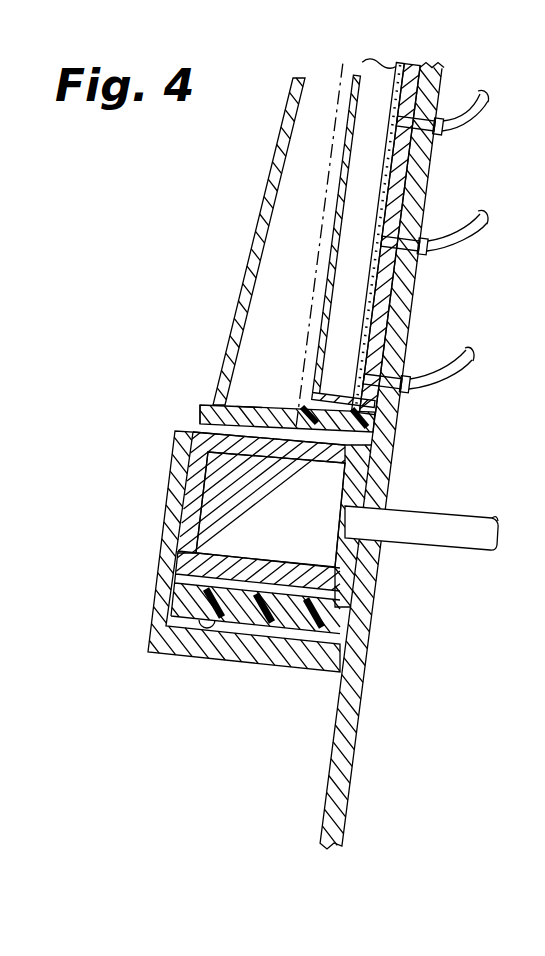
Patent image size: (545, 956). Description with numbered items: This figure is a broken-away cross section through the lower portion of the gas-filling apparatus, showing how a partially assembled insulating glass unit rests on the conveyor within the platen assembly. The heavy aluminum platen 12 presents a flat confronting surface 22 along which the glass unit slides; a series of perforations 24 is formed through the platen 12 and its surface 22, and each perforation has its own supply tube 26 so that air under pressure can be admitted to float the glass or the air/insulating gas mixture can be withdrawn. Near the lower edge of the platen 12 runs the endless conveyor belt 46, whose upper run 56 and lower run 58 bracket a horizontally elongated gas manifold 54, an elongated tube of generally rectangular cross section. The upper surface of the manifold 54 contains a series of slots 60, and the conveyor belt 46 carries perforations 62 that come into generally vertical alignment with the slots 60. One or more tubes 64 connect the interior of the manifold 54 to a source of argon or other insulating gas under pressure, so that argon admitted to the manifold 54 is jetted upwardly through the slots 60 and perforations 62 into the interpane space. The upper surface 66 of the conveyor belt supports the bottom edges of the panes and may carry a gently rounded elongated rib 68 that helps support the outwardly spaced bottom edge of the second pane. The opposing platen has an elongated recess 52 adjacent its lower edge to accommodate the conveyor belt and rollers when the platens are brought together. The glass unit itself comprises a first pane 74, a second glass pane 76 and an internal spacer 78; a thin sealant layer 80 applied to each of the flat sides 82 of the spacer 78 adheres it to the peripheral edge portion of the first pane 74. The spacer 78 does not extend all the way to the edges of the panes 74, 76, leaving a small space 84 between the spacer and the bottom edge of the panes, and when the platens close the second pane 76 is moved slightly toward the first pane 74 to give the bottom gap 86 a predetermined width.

The platen 12 is at (383, 483).
The confronting surface 22 is at (330, 750).
The perforations 24 is at (415, 210).
The supply tube 26 is at (444, 356).
The conveyor belt 46 is at (200, 417).
The elongated recess 52 is at (531, 703).
The gas manifold 54 is at (220, 513).
The upper run 56 is at (208, 405).
The lower run 58 is at (190, 603).
The slots 60 is at (368, 462).
The perforations 62 is at (288, 461).
The tube 64 is at (428, 536).
The surface 66 is at (284, 408).
The elongated rib 68 is at (251, 405).
The first pane 74 is at (407, 84).
The second glass pane 76 is at (271, 176).
The internal spacer 78 is at (363, 141).
The sealant layer 80 is at (396, 243).
The flat sides 82 is at (352, 112).
The small space 84 is at (363, 416).
The bottom gap 86 is at (201, 422).